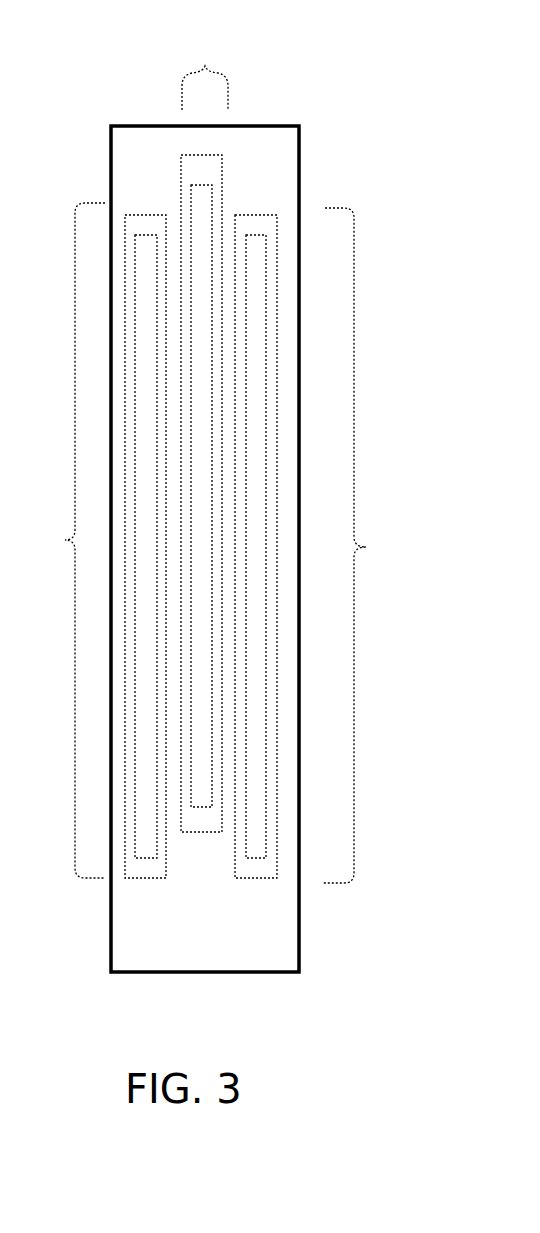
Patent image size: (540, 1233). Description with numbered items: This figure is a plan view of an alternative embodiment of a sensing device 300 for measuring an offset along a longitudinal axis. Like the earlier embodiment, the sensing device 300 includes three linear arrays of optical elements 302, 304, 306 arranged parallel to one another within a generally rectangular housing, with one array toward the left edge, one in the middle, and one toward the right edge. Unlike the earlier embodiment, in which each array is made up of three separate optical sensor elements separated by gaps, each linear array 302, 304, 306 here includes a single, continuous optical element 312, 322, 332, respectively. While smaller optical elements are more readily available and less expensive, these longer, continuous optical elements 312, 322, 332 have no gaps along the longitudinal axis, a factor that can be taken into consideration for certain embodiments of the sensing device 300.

The sensing device 300 is at (287, 43).
The linear array of optical elements 302 is at (63, 540).
The linear array of optical elements 304 is at (205, 73).
The linear array of optical elements 306 is at (370, 545).
The continuous optical element 312 is at (137, 297).
The continuous optical element 322 is at (210, 202).
The continuous optical element 332 is at (265, 392).